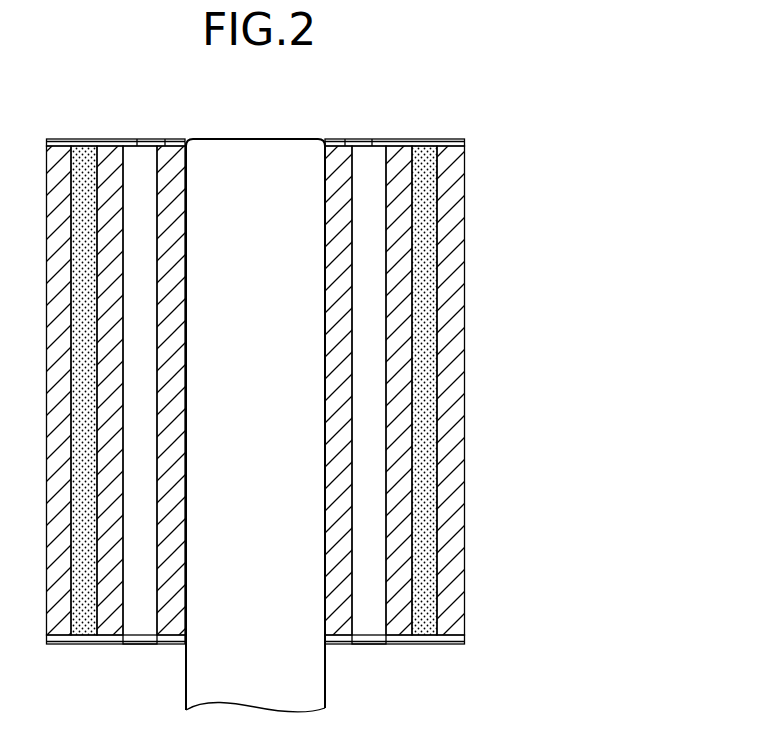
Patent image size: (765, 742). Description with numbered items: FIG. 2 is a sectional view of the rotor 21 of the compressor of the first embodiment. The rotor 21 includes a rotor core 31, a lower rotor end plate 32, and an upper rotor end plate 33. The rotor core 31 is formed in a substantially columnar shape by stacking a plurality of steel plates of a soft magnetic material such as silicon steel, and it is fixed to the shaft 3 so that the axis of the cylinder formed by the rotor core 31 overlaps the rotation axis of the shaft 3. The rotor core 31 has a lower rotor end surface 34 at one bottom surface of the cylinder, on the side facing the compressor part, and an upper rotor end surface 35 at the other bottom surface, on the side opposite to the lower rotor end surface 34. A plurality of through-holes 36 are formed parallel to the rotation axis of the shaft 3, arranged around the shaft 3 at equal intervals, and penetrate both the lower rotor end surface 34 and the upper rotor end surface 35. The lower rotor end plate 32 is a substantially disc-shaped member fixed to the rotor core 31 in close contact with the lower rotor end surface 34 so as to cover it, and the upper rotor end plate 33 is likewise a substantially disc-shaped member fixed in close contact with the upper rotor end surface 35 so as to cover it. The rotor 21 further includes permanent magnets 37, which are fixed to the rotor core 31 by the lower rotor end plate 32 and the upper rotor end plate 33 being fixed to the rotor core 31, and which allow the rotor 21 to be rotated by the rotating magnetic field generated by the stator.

The rotor 21 is at (486, 130).
The shaft 3 is at (254, 150).
The rotor core 31 is at (465, 419).
The lower rotor end plate 32 is at (420, 645).
The upper rotor end plate 33 is at (418, 146).
The lower rotor end surface 34 is at (87, 645).
The upper rotor end surface 35 is at (83, 146).
The through-holes 36 is at (140, 310).
The permanent magnets 37 is at (83, 252).